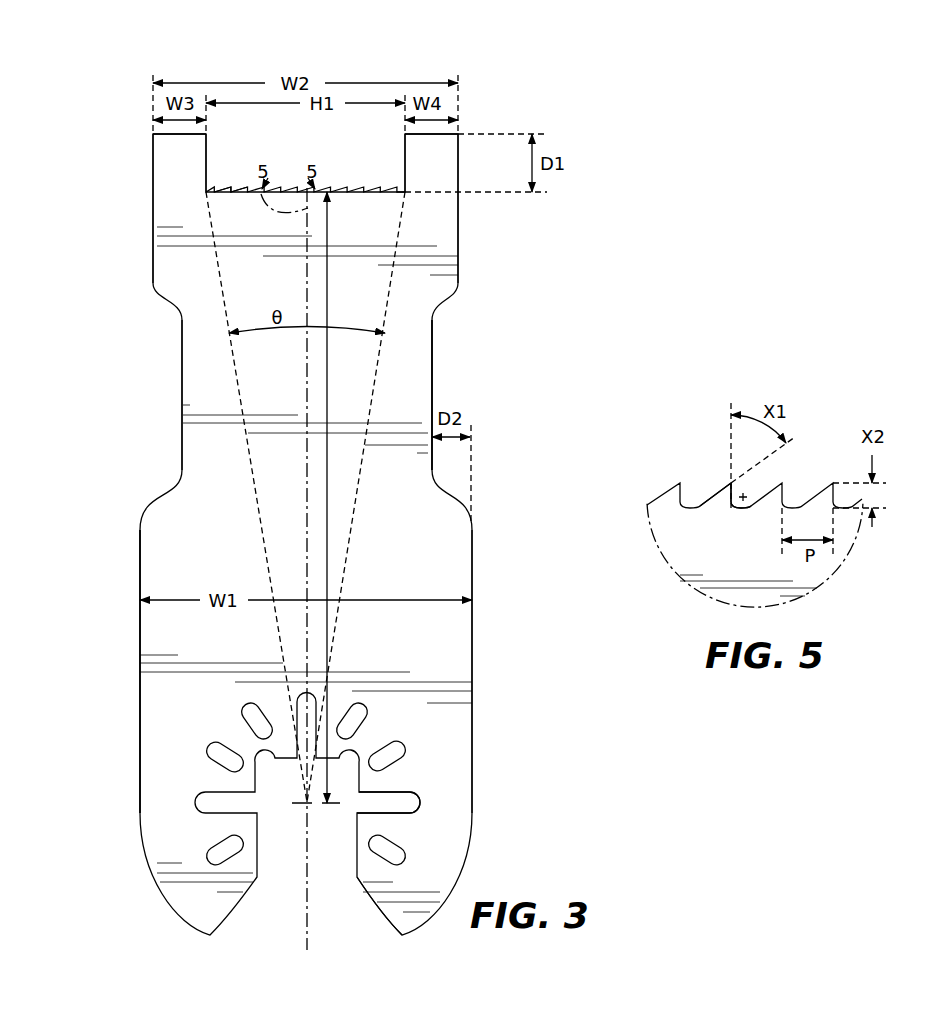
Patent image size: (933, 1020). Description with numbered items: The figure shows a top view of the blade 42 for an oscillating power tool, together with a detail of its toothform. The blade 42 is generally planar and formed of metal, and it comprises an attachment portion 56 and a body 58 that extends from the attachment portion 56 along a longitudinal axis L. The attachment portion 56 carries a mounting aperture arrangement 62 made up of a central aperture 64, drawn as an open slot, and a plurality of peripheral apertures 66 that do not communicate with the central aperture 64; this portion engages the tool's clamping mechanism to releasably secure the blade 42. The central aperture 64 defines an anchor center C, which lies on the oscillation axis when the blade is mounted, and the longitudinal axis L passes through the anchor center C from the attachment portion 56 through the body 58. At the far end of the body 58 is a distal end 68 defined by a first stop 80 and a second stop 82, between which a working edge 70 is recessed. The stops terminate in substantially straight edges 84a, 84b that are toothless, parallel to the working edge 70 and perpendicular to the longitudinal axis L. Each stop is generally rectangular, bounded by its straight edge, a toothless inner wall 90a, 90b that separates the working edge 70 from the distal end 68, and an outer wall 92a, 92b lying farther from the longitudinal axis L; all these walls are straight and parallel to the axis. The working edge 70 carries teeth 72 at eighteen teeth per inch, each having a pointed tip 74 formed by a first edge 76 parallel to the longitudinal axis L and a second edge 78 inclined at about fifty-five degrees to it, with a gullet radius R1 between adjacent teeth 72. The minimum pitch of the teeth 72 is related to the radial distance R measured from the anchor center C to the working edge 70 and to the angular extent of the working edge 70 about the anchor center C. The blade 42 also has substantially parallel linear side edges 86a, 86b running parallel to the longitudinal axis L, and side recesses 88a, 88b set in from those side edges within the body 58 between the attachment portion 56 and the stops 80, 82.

In FIG. 3, the blade 42 is at (545, 107).
In FIG. 3, the attachment portion 56 is at (175, 800).
In FIG. 3, the body 58 is at (392, 349).
In FIG. 3, the mounting aperture arrangement 62 is at (417, 766).
In FIG. 3, the central aperture 64 is at (356, 838).
In FIG. 3, the peripheral apertures 66 is at (212, 745).
In FIG. 3, the distal end 68 is at (140, 148).
In FIG. 3, the working edge 70 is at (333, 190).
In FIG. 3, the teeth 72 is at (240, 188).
In FIG. 5, the teeth 72 is at (672, 497).
In FIG. 5, the pointed tip 74 is at (700, 482).
In FIG. 5, the first edge 76 is at (740, 488).
In FIG. 5, the second edge 78 is at (729, 482).
In FIG. 3, the first stop 80 is at (178, 155).
In FIG. 3, the second stop 82 is at (430, 158).
In FIG. 3, the substantially straight edge 84a is at (178, 133).
In FIG. 3, the substantially straight edge 84b is at (440, 132).
In FIG. 3, the side edge 86a is at (138, 573).
In FIG. 3, the side edge 86b is at (474, 573).
In FIG. 3, the side recess 88a is at (156, 373).
In FIG. 3, the side recess 88b is at (460, 374).
In FIG. 3, the inner wall 90a is at (207, 150).
In FIG. 3, the inner wall 90b is at (405, 150).
In FIG. 3, the outer wall 92a is at (155, 170).
In FIG. 3, the outer wall 92b is at (460, 177).
In FIG. 3, the radial distance R is at (328, 292).
In FIG. 5, the gullet radius R1 is at (737, 508).
In FIG. 3, the anchor center C is at (306, 806).
In FIG. 3, the longitudinal axis L is at (306, 477).